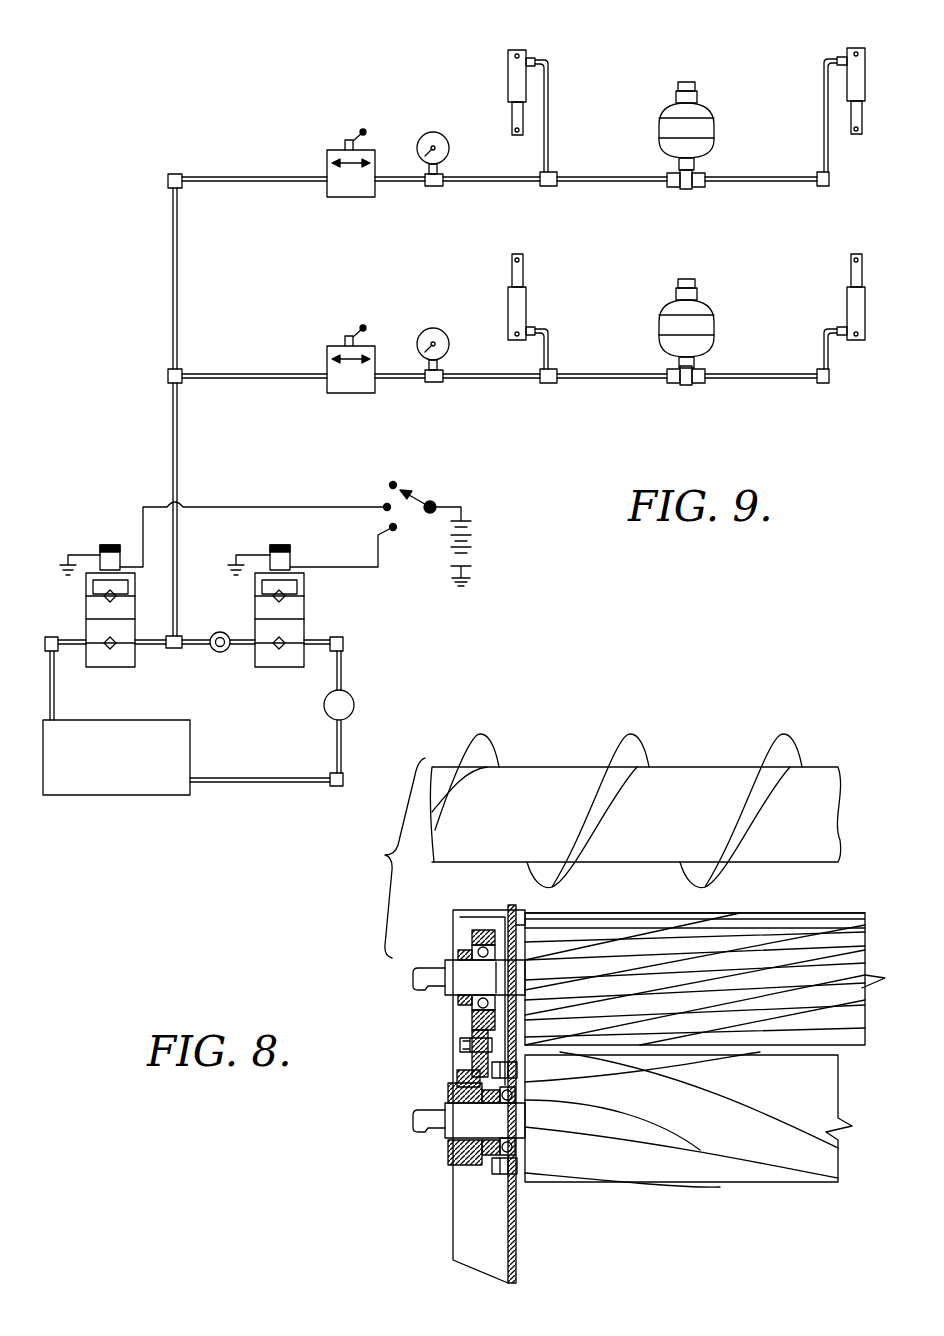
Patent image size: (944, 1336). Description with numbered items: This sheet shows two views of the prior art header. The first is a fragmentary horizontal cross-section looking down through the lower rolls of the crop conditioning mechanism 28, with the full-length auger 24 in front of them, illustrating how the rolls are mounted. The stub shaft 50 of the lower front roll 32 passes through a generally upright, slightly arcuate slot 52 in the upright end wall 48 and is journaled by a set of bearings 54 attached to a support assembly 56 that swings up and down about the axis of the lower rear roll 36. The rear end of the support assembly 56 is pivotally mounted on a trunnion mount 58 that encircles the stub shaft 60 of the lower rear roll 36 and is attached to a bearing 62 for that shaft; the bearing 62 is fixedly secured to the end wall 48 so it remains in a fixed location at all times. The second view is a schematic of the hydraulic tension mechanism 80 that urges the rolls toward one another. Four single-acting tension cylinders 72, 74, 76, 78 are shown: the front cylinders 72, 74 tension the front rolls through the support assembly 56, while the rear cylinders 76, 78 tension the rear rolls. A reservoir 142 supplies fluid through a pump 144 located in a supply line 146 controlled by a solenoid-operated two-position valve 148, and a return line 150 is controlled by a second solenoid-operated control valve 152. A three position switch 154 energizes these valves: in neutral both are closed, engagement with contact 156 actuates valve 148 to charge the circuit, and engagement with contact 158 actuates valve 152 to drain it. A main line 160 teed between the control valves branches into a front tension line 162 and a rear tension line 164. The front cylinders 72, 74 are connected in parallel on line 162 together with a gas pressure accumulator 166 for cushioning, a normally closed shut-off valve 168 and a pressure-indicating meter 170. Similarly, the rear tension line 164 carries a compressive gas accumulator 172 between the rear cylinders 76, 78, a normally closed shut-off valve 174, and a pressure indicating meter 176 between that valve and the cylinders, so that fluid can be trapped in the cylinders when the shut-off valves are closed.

In FIG. 8, the auger 24 is at (692, 770).
In FIG. 8, the crop conditioning mechanism 28 is at (847, 910).
In FIG. 8, the lower front roll 32 is at (672, 914).
In FIG. 8, the lower rear roll 36 is at (750, 1193).
In FIG. 8, the end wall 48 is at (517, 1242).
In FIG. 8, the stub shaft 50 is at (452, 990).
In FIG. 8, the slot 52 is at (502, 992).
In FIG. 8, the bearings 54 is at (472, 947).
In FIG. 8, the support assembly 56 is at (468, 1068).
In FIG. 8, the trunnion mount 58 is at (450, 1150).
In FIG. 8, the stub shaft 60 is at (453, 1112).
In FIG. 8, the bearing 62 is at (520, 1096).
In FIG. 9, the front tension cylinder 72 is at (523, 303).
In FIG. 9, the front tension cylinder 74 is at (847, 300).
In FIG. 9, the rear tension cylinder 76 is at (507, 85).
In FIG. 9, the rear tension cylinder 78 is at (869, 62).
In FIG. 9, the tension mechanism 80 is at (262, 128).
In FIG. 9, the reservoir 142 is at (110, 795).
In FIG. 9, the pump 144 is at (324, 708).
In FIG. 9, the supply line 146 is at (342, 670).
In FIG. 9, the solenoid-operated two-position valve 148 is at (305, 611).
In FIG. 9, the return line 150 is at (52, 678).
In FIG. 9, the solenoid-operated control valve 152 is at (85, 610).
In FIG. 9, the three position switch 154 is at (444, 488).
In FIG. 9, the contact 156 is at (397, 532).
In FIG. 9, the contact 158 is at (385, 500).
In FIG. 9, the main line 160 is at (172, 428).
In FIG. 9, the front tension line 162 is at (258, 372).
In FIG. 9, the rear tension line 164 is at (287, 183).
In FIG. 9, the gas pressure accumulator 166 is at (700, 310).
In FIG. 9, the shut-off valve 168 is at (337, 346).
In FIG. 9, the pressure-indicating meter 170 is at (433, 328).
In FIG. 9, the compressive gas accumulator 172 is at (668, 110).
In FIG. 9, the shut-off valve 174 is at (337, 150).
In FIG. 9, the pressure indicating meter 176 is at (433, 132).